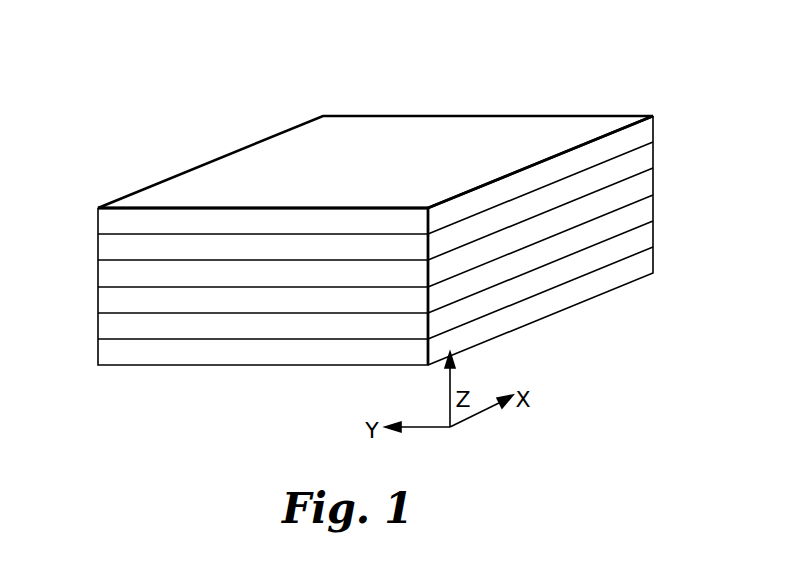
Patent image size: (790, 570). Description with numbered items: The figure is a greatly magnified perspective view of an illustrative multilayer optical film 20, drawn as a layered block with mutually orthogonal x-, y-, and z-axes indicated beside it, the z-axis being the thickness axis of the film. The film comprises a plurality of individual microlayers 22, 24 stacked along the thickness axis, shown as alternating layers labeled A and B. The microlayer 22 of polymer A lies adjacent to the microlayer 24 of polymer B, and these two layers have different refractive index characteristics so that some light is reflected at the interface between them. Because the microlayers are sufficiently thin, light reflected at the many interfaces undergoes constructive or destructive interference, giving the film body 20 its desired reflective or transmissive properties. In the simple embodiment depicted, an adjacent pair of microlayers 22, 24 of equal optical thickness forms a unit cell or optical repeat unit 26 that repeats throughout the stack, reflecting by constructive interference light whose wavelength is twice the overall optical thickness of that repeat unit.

The multilayer optical film 20 is at (556, 82).
The microlayer of polymer A 22 is at (132, 268).
The microlayer of polymer B 24 is at (122, 301).
The optical repeat unit 26 is at (92, 262).